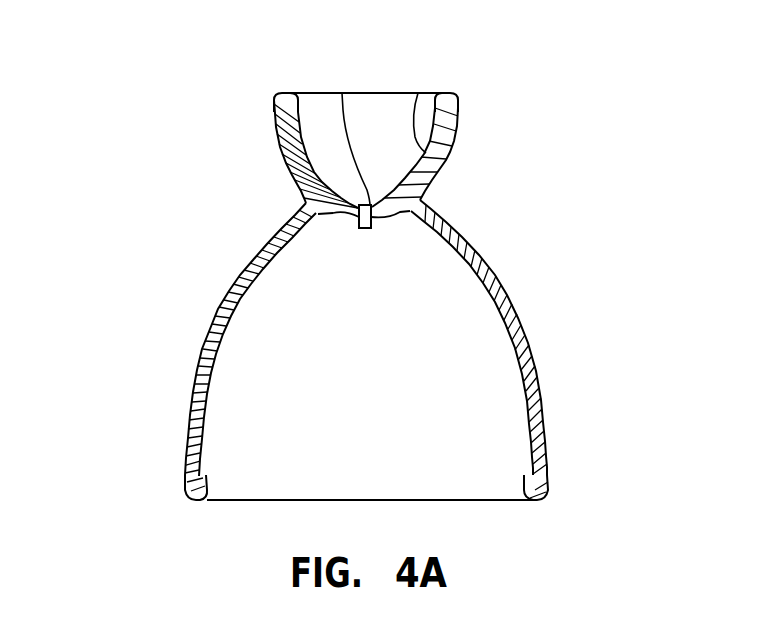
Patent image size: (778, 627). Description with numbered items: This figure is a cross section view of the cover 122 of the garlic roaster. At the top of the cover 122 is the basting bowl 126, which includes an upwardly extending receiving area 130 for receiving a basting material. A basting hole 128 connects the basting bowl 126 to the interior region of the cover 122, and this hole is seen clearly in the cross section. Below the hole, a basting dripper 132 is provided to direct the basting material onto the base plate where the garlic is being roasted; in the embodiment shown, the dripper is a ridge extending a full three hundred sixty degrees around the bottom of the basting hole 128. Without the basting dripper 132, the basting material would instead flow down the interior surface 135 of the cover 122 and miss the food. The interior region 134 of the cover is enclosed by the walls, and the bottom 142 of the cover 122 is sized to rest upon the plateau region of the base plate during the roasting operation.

The cover 122 is at (520, 320).
The basting bowl 126 is at (283, 92).
The basting hole 128 is at (342, 93).
The upwardly extending receiving area 130 is at (418, 93).
The basting dripper 132 is at (353, 230).
The interior cavity 134 is at (397, 402).
The interior surface 135 is at (212, 411).
The bottom 142 is at (195, 500).